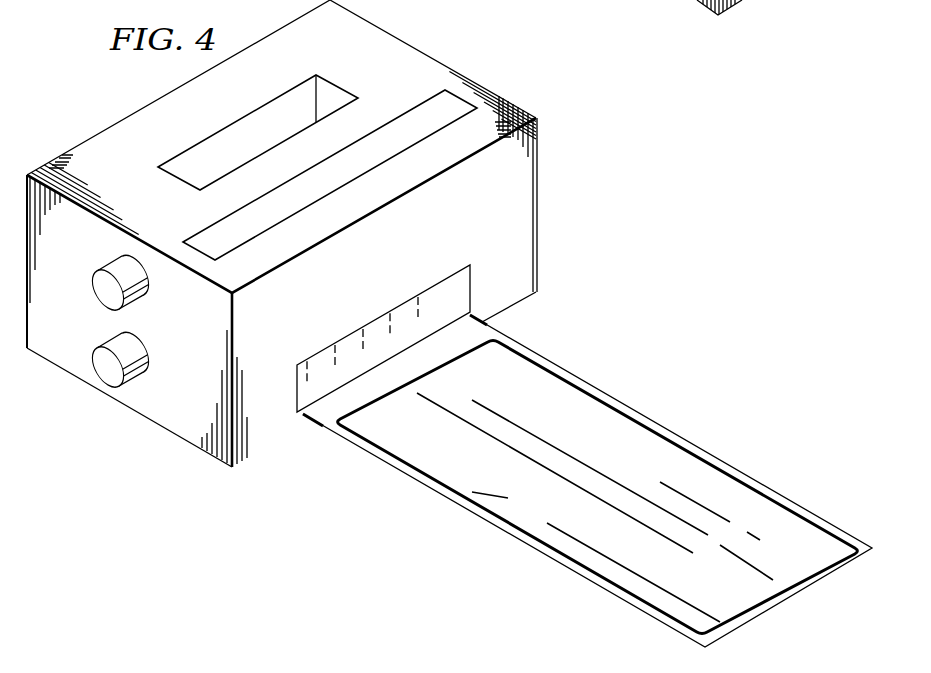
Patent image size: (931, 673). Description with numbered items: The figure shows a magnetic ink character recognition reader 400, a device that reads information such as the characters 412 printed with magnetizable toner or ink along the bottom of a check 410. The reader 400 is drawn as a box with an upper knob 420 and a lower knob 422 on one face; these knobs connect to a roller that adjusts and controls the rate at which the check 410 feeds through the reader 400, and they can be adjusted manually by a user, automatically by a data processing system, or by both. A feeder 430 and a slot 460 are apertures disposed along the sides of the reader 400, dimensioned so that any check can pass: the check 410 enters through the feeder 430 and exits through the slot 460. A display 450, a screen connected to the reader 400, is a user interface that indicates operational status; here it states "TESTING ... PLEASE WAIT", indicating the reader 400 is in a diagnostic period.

The magnetic ink character recognition reader 400 is at (440, 53).
The check 410 is at (728, 455).
The characters 412 is at (475, 504).
The upper knob 420 is at (107, 296).
The lower knob 422 is at (103, 370).
The feeder 430 is at (463, 282).
The display 450 is at (418, 108).
The slot 460 is at (282, 106).